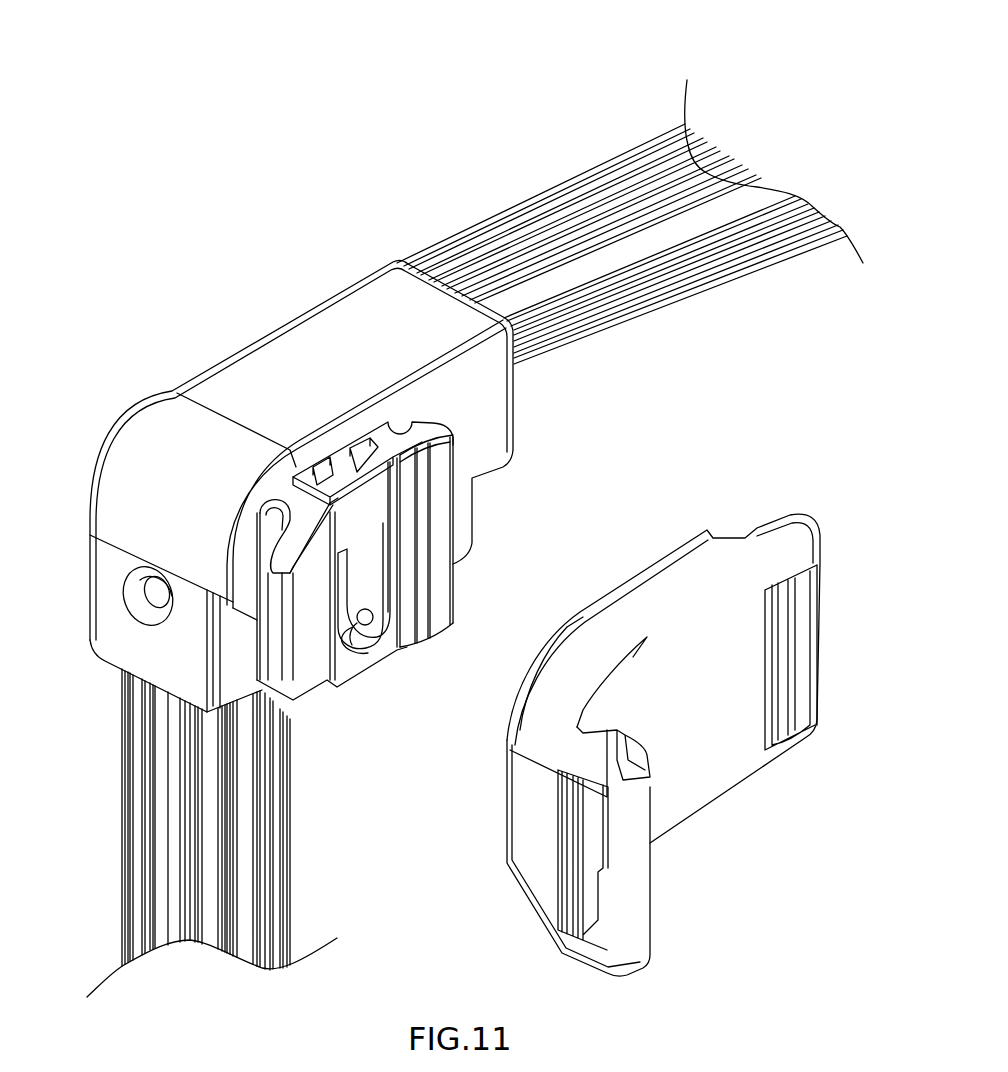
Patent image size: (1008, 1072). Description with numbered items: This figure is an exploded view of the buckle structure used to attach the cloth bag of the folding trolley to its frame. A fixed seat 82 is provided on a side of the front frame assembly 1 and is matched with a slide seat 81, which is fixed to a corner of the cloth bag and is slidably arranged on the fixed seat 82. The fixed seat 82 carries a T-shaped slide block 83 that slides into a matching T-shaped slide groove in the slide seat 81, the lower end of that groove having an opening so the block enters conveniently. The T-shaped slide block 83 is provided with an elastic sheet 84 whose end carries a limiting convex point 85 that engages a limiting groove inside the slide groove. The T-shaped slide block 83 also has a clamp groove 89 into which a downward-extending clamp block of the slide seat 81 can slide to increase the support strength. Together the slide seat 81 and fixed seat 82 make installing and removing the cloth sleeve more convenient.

The front frame assembly 1 is at (587, 202).
The slide seat 81 is at (689, 792).
The fixed seat 82 is at (174, 475).
The T-shaped slide block 83 is at (410, 410).
The elastic sheet 84 is at (400, 581).
The limiting convex point 85 is at (372, 648).
The clamp groove 89 is at (331, 442).